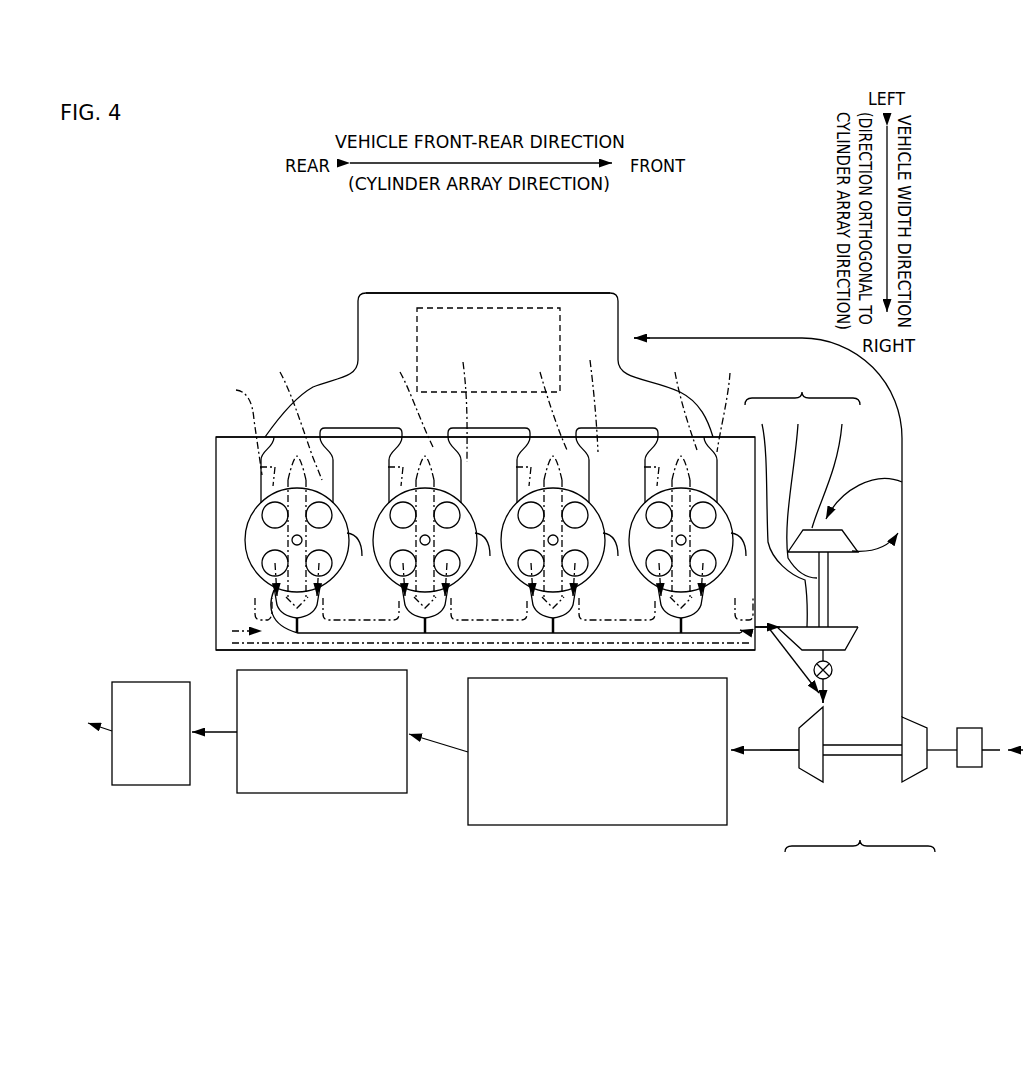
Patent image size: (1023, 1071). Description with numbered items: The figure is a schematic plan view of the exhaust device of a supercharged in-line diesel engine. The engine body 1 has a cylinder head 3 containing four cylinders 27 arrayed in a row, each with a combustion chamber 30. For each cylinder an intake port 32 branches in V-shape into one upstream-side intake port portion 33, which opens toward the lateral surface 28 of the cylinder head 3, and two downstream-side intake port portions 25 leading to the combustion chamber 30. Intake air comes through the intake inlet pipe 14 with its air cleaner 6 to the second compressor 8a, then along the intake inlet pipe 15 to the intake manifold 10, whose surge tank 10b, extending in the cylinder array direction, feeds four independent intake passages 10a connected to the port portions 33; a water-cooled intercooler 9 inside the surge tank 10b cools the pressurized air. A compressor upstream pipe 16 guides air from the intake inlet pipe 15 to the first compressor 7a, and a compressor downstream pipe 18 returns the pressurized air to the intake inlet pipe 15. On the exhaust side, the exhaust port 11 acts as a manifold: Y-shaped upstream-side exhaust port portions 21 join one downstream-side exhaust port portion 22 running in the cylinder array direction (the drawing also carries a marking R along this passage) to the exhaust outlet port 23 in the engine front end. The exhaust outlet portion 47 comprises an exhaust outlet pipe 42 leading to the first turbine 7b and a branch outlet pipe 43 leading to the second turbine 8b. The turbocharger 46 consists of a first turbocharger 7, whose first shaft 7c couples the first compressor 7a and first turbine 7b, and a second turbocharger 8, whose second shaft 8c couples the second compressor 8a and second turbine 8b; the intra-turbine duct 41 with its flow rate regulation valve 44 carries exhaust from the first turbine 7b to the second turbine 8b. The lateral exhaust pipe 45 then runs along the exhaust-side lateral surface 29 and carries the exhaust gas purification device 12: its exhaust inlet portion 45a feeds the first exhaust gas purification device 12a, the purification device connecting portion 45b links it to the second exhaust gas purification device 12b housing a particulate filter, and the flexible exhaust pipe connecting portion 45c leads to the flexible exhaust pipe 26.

The engine body 1 is at (440, 543).
The cylinder head 3 is at (226, 514).
The lateral surface of the cylinder head 28 is at (258, 436).
The exhaust-side lateral surface 29 is at (232, 662).
The intake manifold 10 is at (338, 301).
The independent intake passage 10a is at (260, 436).
The surge tank 10b is at (385, 311).
The water-cooled intercooler 9 is at (465, 306).
The cylinder 27 is at (234, 541).
The intake port 32 is at (472, 406).
The upstream-side intake port portion 33 is at (480, 414).
The downstream-side intake port portion 25 is at (262, 487).
The combustion chamber 30 is at (553, 561).
The upstream-side exhaust port portion 21 is at (268, 610).
The exhaust port 11 is at (228, 631).
The downstream-side exhaust port portion 22 is at (447, 645).
The region R is at (488, 632).
The intake inlet pipe 15 is at (905, 603).
The turbocharger 46 is at (840, 624).
The first turbocharger 7 is at (802, 499).
The first compressor 7a is at (833, 467).
The first turbine 7b is at (779, 517).
The first shaft 7c is at (802, 492).
The second turbocharger 8 is at (860, 792).
The second compressor 8a is at (913, 773).
The second turbine 8b is at (805, 773).
The second shaft 8c is at (860, 757).
The compressor upstream pipe 16 is at (880, 478).
The compressor downstream pipe 18 is at (880, 552).
The exhaust outlet port 23 is at (760, 622).
The intra-turbine duct 41 is at (838, 650).
The exhaust outlet pipe 42 is at (768, 632).
The branch outlet pipe 43 is at (786, 652).
The flow rate regulation valve 44 is at (833, 672).
The intake inlet pipe 14 is at (940, 747).
The air cleaner 6 is at (972, 770).
The exhaust outlet portion 47 is at (737, 680).
The lateral exhaust pipe 45 is at (450, 806).
The exhaust inlet portion 45a is at (767, 758).
The purification device connecting portion 45b is at (437, 748).
The flexible exhaust pipe connecting portion 45c is at (217, 735).
The exhaust gas purification device 12 is at (482, 779).
The first exhaust gas purification device 12a is at (597, 805).
The second exhaust gas purification device 12b is at (325, 790).
The flexible exhaust pipe 26 is at (147, 808).